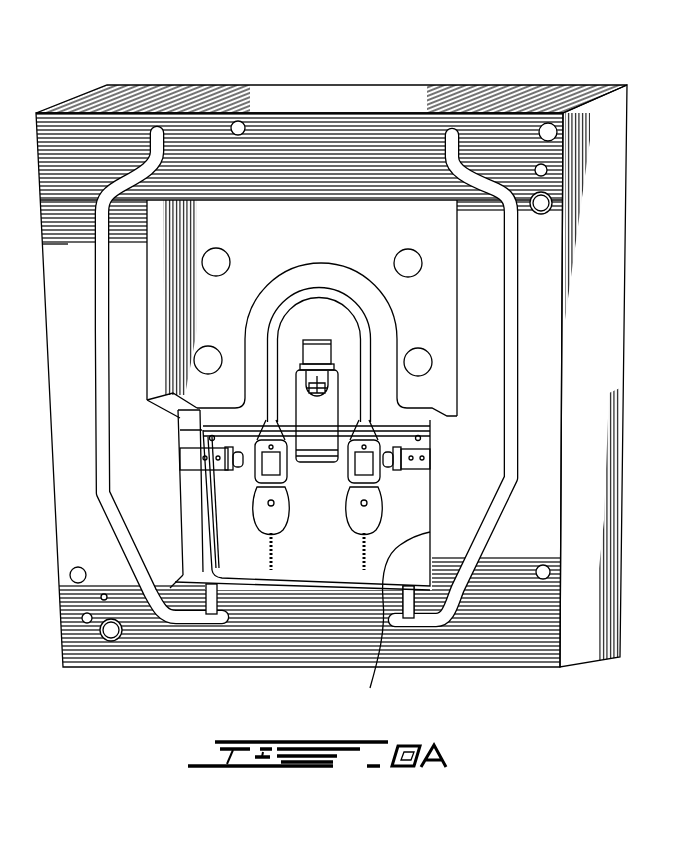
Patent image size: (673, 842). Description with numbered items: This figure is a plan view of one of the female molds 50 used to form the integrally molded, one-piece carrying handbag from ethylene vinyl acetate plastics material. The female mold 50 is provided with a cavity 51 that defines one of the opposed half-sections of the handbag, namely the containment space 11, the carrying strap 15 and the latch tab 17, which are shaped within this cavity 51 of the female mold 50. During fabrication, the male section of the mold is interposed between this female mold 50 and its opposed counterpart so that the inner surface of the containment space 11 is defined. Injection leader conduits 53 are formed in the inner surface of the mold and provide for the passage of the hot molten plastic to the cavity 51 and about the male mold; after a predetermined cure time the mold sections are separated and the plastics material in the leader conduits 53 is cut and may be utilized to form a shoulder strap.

The containment space 11 is at (408, 494).
The carrying strap 15 is at (365, 330).
The latch tab 17 is at (325, 340).
The female mold 50 is at (160, 650).
The cavity 51 is at (302, 629).
The injection leader conduit 53 is at (474, 574).